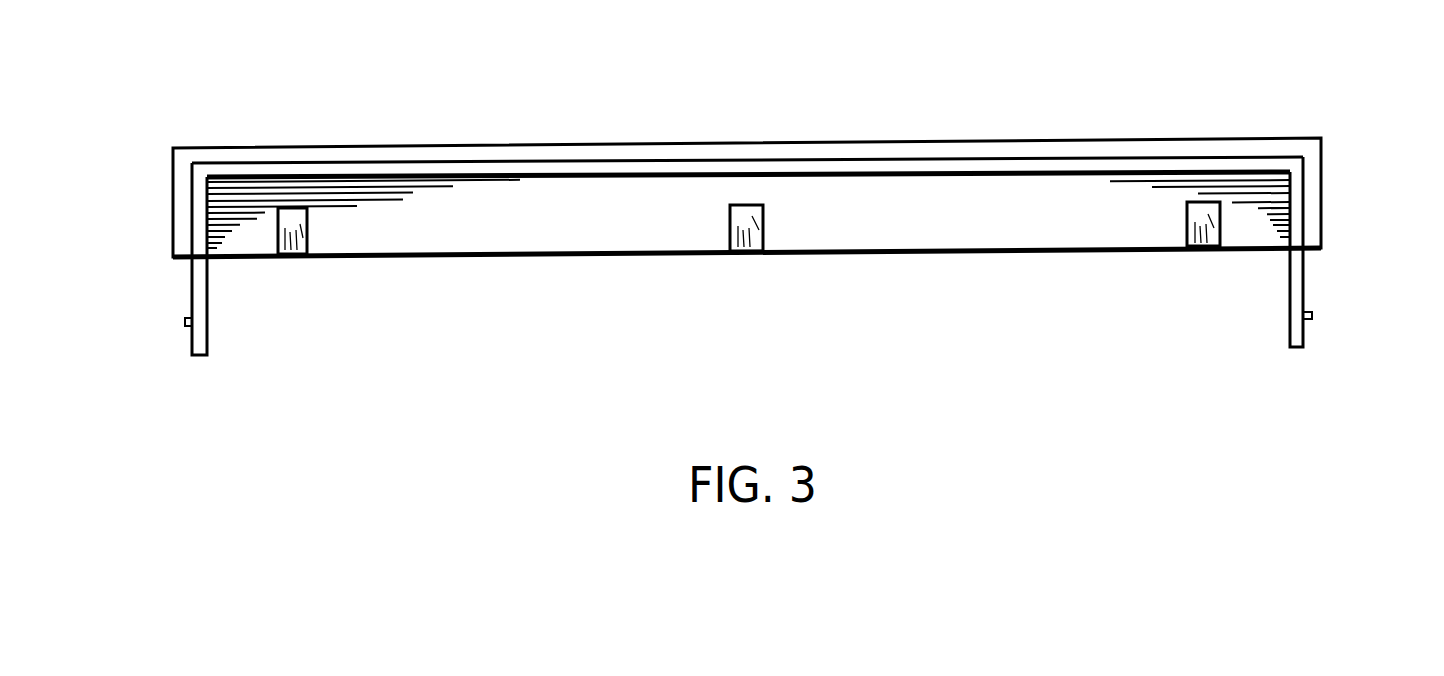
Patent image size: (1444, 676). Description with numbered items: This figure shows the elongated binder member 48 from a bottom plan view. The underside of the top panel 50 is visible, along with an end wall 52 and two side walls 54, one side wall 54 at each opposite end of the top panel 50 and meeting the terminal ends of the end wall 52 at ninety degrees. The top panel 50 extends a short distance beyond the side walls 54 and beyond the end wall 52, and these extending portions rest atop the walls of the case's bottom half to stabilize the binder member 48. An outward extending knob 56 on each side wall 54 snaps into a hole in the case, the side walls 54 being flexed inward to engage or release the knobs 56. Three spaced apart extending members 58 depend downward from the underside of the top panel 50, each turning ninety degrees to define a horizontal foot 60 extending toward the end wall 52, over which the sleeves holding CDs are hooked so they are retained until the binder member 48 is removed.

The binder member 48 is at (1008, 124).
The top panel 50 is at (548, 222).
The end wall 52 is at (677, 160).
The side wall 54 is at (192, 285).
The knob 56 is at (185, 323).
The extending member 58 is at (305, 257).
The foot 60 is at (288, 217).